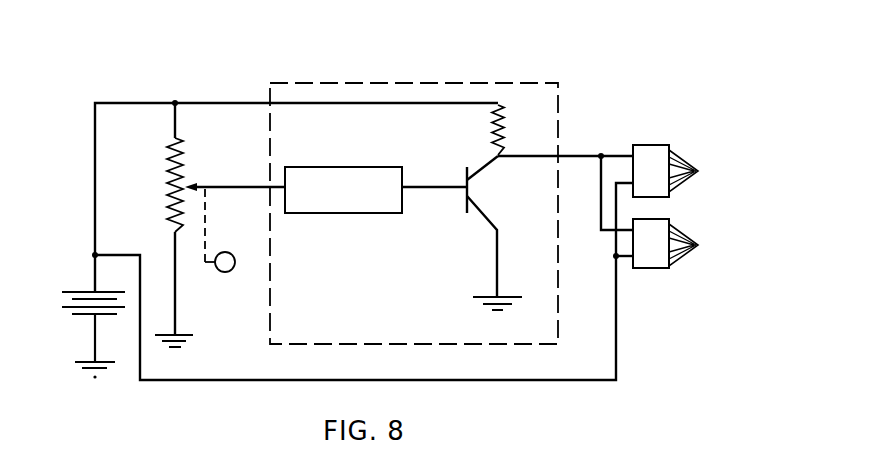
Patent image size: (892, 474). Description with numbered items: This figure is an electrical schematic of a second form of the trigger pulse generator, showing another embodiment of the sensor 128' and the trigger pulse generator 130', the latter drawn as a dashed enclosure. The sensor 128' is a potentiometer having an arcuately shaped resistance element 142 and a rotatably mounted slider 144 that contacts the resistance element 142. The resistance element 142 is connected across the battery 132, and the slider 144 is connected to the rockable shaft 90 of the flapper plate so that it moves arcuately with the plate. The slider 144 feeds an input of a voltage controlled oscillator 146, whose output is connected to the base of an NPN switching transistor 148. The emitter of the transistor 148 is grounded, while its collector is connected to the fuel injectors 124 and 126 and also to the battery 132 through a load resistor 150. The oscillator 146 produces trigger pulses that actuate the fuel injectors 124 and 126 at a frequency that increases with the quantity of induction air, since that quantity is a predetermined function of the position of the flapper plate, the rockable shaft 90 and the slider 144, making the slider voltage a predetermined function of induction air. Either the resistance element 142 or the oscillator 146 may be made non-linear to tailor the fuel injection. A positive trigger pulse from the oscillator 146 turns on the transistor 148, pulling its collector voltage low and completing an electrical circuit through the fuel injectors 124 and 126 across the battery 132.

The rockable shaft 90 is at (231, 271).
The fuel injector 124 is at (655, 144).
The fuel injector 126 is at (660, 270).
The sensor 128' is at (187, 171).
The trigger pulse generator 130' is at (420, 192).
The battery 132 is at (78, 291).
The resistance element 142 is at (168, 177).
The slider 144 is at (213, 190).
The voltage controlled oscillator 146 is at (360, 167).
The NPN switching transistor 148 is at (450, 208).
The load resistor 150 is at (503, 139).